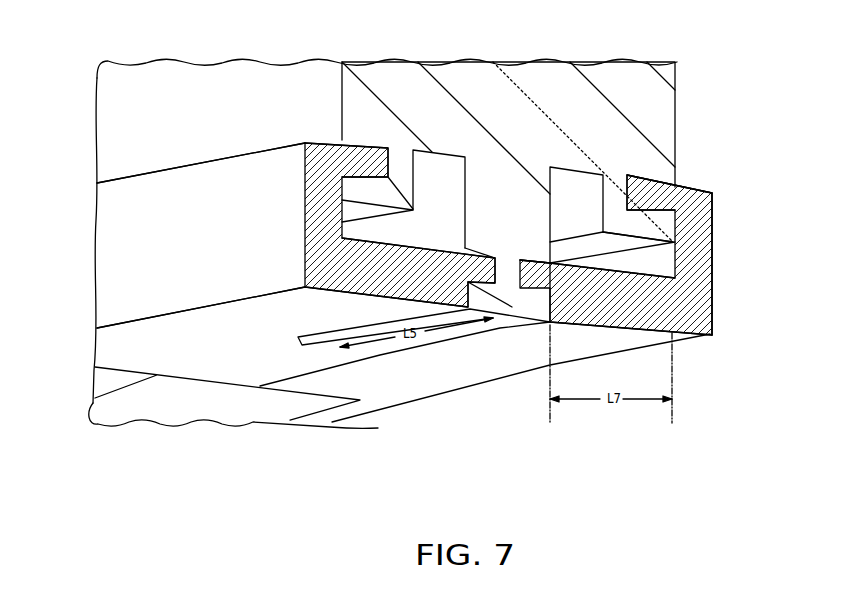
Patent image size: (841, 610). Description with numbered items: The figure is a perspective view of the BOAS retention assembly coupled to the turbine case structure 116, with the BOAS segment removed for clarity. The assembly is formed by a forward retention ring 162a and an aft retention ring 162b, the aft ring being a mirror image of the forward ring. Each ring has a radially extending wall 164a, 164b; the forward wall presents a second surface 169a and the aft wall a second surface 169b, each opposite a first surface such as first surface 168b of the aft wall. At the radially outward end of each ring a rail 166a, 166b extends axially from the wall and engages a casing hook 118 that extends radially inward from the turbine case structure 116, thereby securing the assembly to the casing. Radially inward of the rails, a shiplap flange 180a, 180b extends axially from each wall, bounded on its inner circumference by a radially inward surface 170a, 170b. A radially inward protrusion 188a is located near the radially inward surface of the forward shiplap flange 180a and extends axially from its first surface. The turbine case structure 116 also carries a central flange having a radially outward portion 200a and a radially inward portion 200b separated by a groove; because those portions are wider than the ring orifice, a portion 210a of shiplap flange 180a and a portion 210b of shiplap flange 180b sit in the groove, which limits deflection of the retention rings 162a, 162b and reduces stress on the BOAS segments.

The turbine case structure 116 is at (475, 88).
The casing hook 118 is at (355, 198).
The forward retention ring 162a is at (103, 203).
The aft retention ring 162b is at (718, 207).
The wall 164a is at (320, 208).
The wall 164b is at (700, 243).
The rail 166a is at (338, 158).
The rail 166b is at (658, 178).
The first surface 168b is at (637, 266).
The second surface 169a is at (155, 251).
The second surface 169b is at (710, 270).
The radially inward surface 170a is at (209, 338).
The radially inward surface 170b is at (447, 368).
The shiplap flange 180a is at (402, 283).
The shiplap flange 180b is at (582, 301).
The radially inward protrusion 188a is at (307, 353).
The radially outward portion of central flange 200a is at (424, 193).
The radially inward portion of central flange 200b is at (510, 300).
The portion of shiplap flange 210a is at (487, 265).
The portion of shiplap flange 210b is at (537, 260).